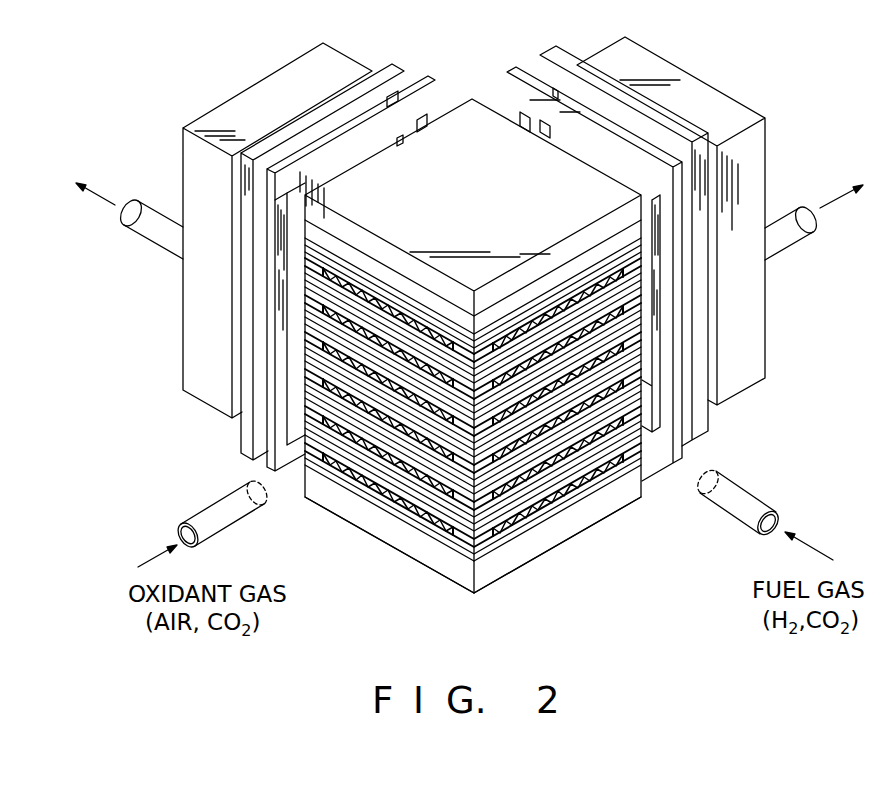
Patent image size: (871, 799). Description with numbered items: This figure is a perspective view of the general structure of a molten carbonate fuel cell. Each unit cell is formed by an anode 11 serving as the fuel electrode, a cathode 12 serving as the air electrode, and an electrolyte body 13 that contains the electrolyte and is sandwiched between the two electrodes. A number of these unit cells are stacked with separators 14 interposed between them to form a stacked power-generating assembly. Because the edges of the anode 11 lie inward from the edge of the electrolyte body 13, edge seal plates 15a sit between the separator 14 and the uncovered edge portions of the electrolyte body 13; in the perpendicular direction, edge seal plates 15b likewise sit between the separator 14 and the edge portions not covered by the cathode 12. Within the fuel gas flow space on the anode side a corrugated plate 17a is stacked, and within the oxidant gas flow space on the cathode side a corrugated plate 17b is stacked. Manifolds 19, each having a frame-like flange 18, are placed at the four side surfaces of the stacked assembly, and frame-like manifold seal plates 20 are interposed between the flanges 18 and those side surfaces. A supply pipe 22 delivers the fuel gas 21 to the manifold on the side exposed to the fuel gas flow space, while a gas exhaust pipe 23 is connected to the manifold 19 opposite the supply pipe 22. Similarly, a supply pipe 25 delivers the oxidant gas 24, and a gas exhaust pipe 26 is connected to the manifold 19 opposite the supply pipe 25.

The anode 11 is at (585, 463).
The cathode 12 is at (423, 523).
The electrolyte body 13 is at (548, 485).
The separator 14 is at (520, 512).
The edge seal plate 15a is at (482, 510).
The edge seal plate 15b is at (315, 460).
The corrugated plate 17a is at (582, 458).
The corrugated plate 17b is at (398, 502).
The frame-like flange 18 is at (392, 56).
The manifold 19 is at (330, 53).
The manifold seal plate 20 is at (428, 74).
The fuel gas 21 is at (812, 543).
The supply pipe 22 is at (742, 487).
The gas exhaust pipe 23 is at (140, 240).
The oxidant gas 24 is at (157, 553).
The supply pipe 25 is at (195, 507).
The gas exhaust pipe 26 is at (803, 238).